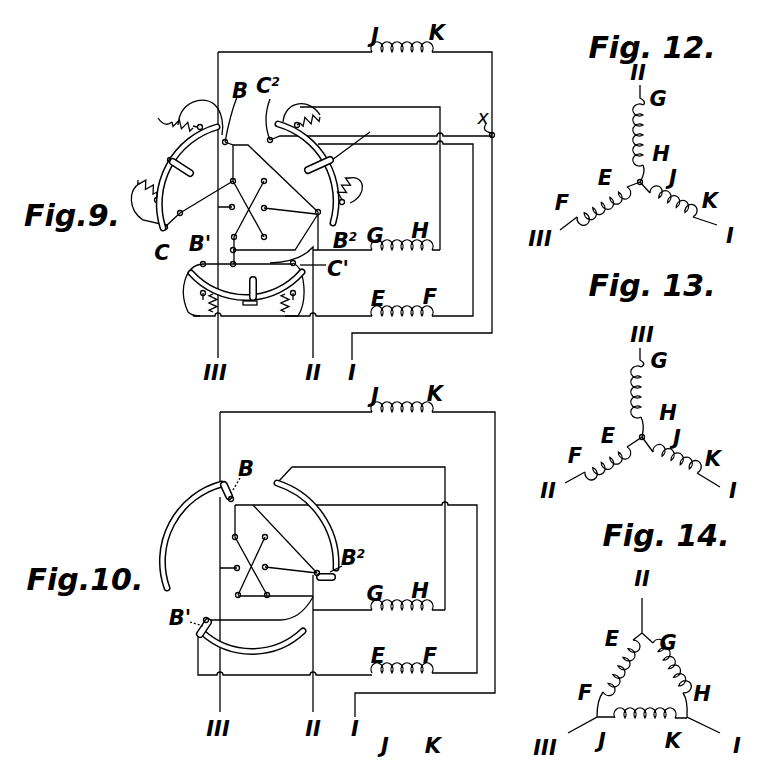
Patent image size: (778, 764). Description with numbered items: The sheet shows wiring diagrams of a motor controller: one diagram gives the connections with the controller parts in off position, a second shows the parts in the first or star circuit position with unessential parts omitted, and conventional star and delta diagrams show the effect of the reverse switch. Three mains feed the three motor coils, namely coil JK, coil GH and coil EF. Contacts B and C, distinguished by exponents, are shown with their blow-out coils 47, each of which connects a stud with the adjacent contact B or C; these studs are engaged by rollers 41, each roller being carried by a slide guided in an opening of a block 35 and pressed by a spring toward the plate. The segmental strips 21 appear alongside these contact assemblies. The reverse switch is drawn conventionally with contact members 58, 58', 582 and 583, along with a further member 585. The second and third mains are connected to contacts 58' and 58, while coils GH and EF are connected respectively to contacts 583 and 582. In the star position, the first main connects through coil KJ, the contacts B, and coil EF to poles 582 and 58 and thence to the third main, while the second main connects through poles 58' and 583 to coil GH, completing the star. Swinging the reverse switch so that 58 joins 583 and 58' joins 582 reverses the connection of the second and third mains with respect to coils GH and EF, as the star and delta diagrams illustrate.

In FIG. 9, the segmental conductor / arc 21 is at (162, 228).
In FIG. 10, the segmental conductor / arc 21 is at (180, 508).
In FIG. 9, the block 35 is at (307, 166).
In FIG. 10, the block 35 is at (222, 484).
In FIG. 9, the roller 41 is at (170, 160).
In FIG. 9, the blow-out coil 47 is at (295, 333).
In FIG. 9, the reverse switch contact member 58 is at (224, 198).
In FIG. 10, the reverse switch contact member 58 is at (226, 563).
In FIG. 9, the reverse switch contact member 58' is at (275, 198).
In FIG. 10, the reverse switch contact member 58' is at (268, 558).
In FIG. 9, the reverse switch contact member 582 is at (251, 204).
In FIG. 10, the reverse switch contact member 582 is at (250, 563).
In FIG. 9, the reverse switch contact member 583 is at (258, 171).
In FIG. 10, the reverse switch contact member 583 is at (251, 563).
In FIG. 9, the contact 585 is at (249, 238).